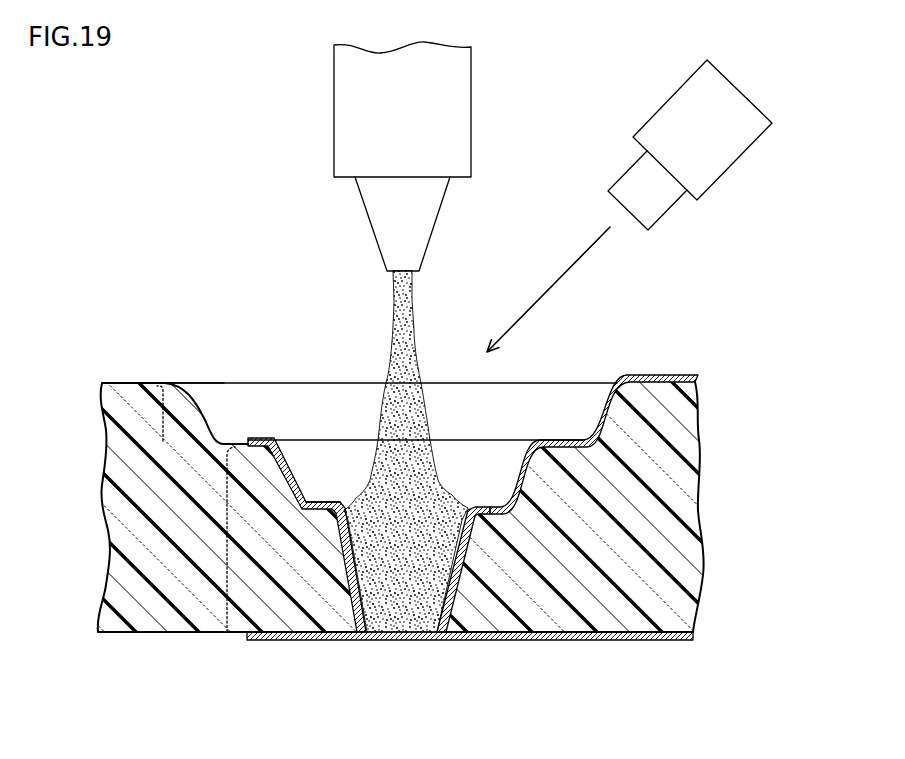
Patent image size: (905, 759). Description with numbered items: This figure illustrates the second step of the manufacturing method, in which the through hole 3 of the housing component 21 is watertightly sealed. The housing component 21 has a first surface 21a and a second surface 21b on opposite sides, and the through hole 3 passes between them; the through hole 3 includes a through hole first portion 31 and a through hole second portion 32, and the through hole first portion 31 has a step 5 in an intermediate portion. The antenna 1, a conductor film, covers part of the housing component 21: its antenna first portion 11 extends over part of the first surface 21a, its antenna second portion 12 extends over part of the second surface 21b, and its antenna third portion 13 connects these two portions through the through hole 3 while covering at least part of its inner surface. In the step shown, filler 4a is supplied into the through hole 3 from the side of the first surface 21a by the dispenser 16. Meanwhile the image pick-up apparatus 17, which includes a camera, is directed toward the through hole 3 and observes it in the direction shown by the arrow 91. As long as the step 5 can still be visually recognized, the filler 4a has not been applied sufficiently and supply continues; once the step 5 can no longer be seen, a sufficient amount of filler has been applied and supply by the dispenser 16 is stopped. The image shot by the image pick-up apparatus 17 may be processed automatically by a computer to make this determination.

The antenna 1 is at (713, 678).
The through hole 3 is at (337, 423).
The filler 4a is at (398, 338).
The step 5 is at (323, 502).
The antenna first portion 11 is at (672, 373).
The antenna second portion 12 is at (596, 636).
The antenna third portion 13 is at (458, 580).
The dispenser 16 is at (452, 113).
The image pick-up apparatus 17 is at (720, 153).
The housing component 21 is at (137, 512).
The first surface 21a is at (138, 383).
The second surface 21b is at (130, 632).
The through hole first portion 31 is at (224, 540).
The through hole second portion 32 is at (153, 417).
The arrow 91 is at (560, 277).